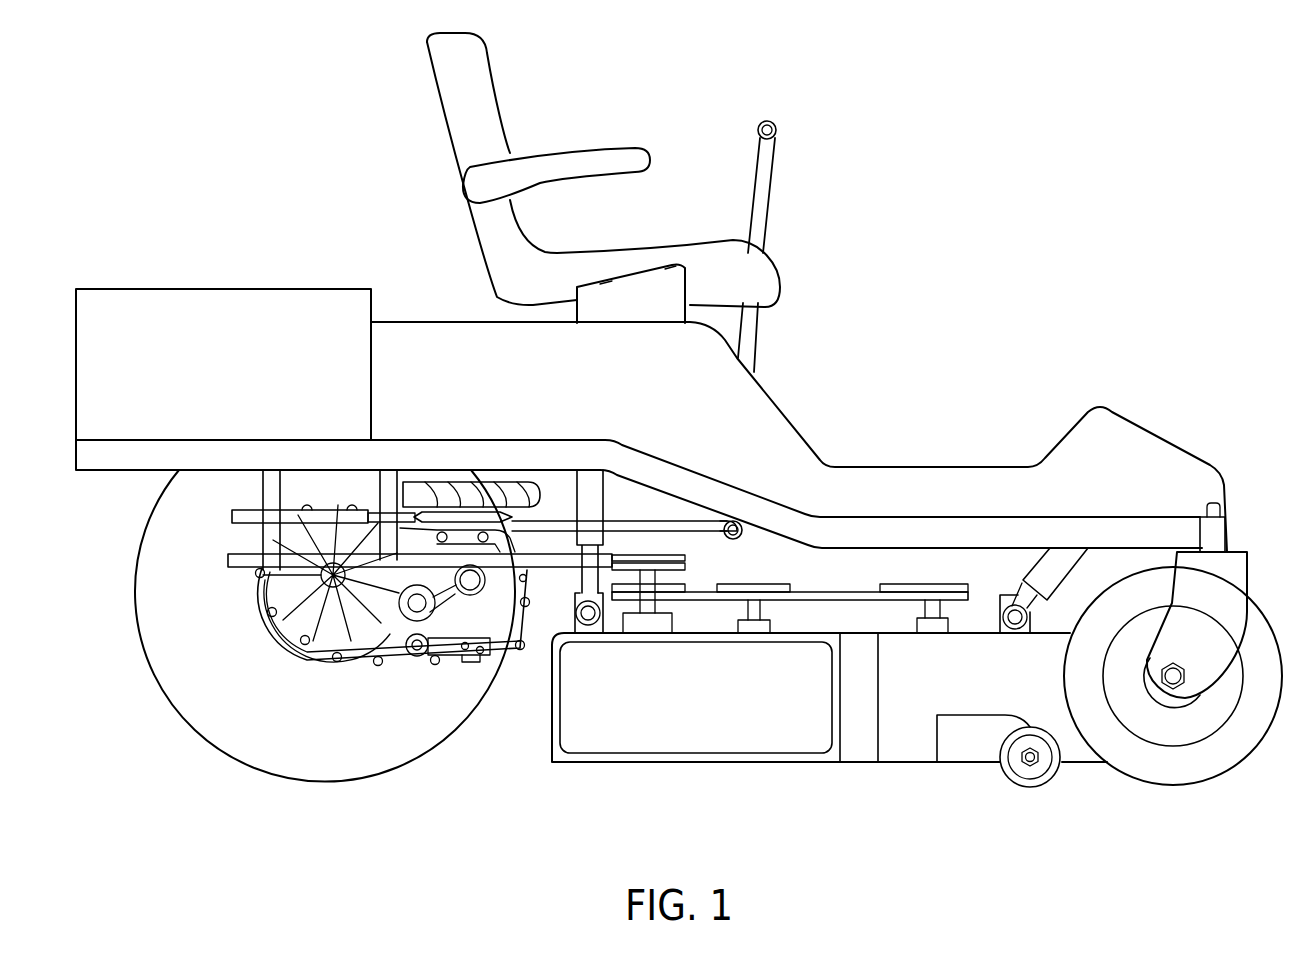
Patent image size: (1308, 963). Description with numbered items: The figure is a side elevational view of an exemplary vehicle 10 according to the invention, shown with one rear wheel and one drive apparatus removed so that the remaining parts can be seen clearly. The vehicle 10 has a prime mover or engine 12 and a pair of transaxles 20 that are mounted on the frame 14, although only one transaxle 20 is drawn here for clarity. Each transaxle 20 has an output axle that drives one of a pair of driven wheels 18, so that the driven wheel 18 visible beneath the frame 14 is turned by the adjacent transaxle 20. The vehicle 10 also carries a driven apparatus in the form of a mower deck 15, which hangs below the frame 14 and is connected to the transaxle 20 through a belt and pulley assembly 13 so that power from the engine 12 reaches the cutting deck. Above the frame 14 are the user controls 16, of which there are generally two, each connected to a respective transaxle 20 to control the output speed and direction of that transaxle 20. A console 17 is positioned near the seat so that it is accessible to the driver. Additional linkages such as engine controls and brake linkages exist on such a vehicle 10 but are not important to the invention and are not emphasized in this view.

The vehicle 10 is at (972, 280).
The engine 12 is at (206, 378).
The belt and pulley assembly 13 is at (703, 571).
The frame 14 is at (873, 515).
The mower deck 15 is at (954, 688).
The user control 16 is at (770, 200).
The console 17 is at (631, 308).
The driven wheel 18 is at (314, 740).
The transaxle 20 is at (250, 650).